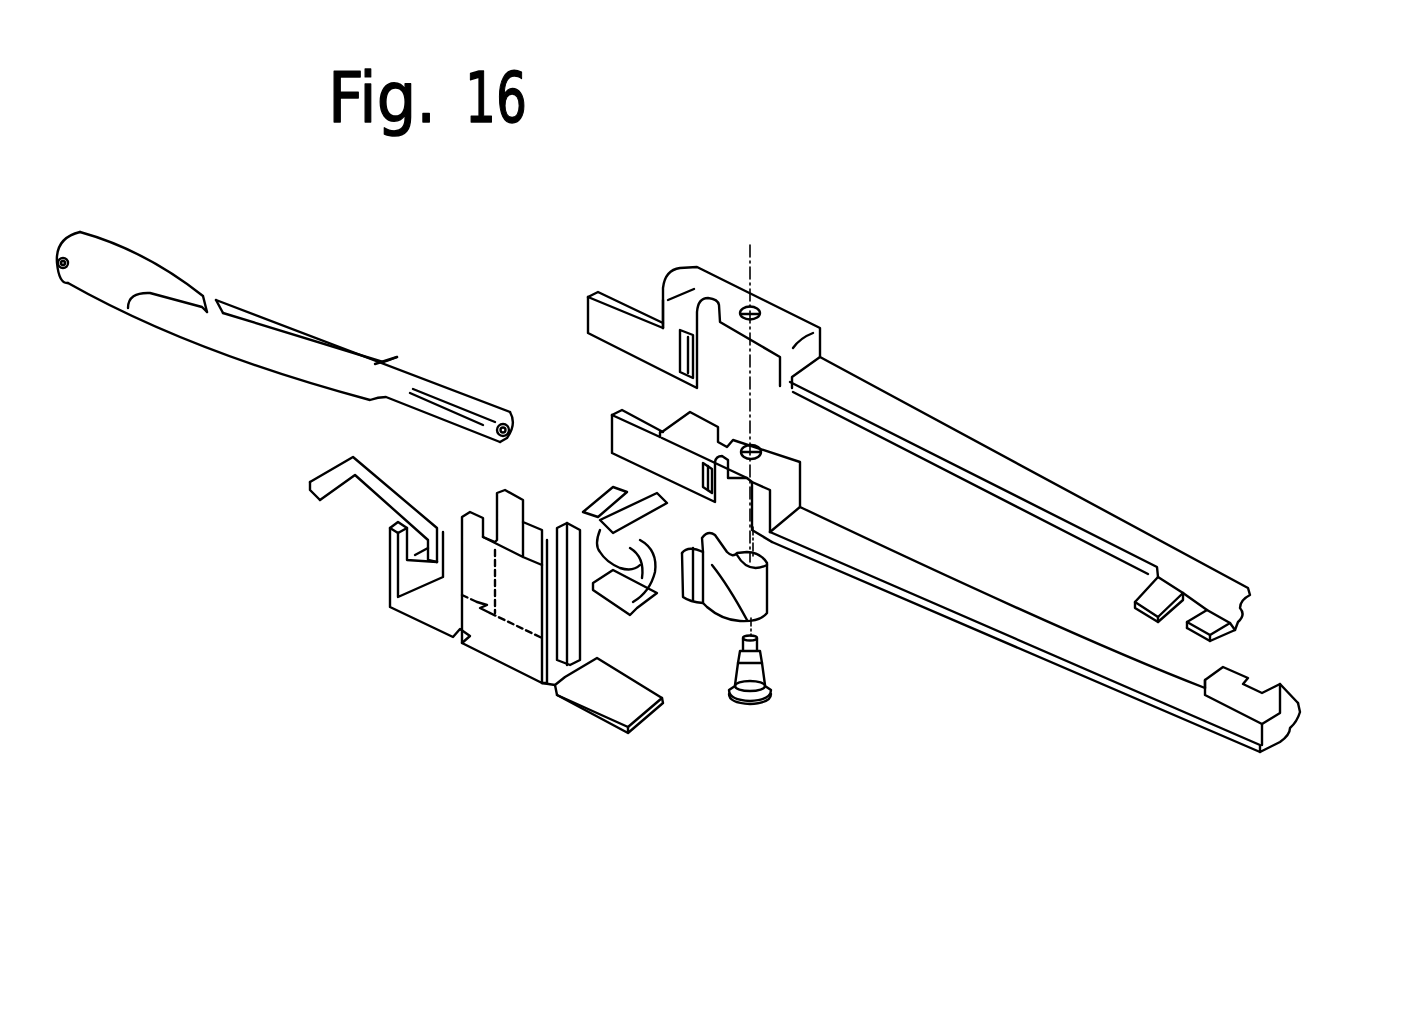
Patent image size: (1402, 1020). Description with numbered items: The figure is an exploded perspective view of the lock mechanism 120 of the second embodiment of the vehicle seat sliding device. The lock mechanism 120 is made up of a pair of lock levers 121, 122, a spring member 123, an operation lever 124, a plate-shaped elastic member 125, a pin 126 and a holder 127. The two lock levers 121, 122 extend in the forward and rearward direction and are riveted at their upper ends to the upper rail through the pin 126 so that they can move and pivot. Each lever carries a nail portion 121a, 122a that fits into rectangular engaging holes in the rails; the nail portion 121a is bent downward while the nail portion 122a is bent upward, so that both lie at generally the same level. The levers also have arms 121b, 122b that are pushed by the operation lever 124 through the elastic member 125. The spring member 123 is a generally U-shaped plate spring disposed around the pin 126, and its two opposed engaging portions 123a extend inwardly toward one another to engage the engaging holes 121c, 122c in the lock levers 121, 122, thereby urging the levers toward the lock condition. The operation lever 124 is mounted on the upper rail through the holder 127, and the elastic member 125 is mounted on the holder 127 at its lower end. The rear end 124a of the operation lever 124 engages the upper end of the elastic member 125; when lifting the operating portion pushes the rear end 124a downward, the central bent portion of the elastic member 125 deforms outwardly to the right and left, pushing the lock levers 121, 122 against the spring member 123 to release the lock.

The lock mechanism 120 is at (592, 258).
The lock lever 121 is at (919, 420).
The nail portion 121a is at (1158, 603).
The arm 121b is at (608, 325).
The engaging hole 121c is at (690, 352).
The lock lever 122 is at (942, 550).
The nail portion 122a is at (1237, 668).
The arm 122b is at (612, 428).
The engaging hole 122c is at (793, 462).
The spring member 123 is at (760, 593).
The engaging portion 123a is at (757, 617).
The operation lever 124 is at (336, 342).
The rear end 124a is at (505, 442).
The elastic member 125 is at (643, 600).
The pin 126 is at (760, 677).
The holder 127 is at (493, 650).